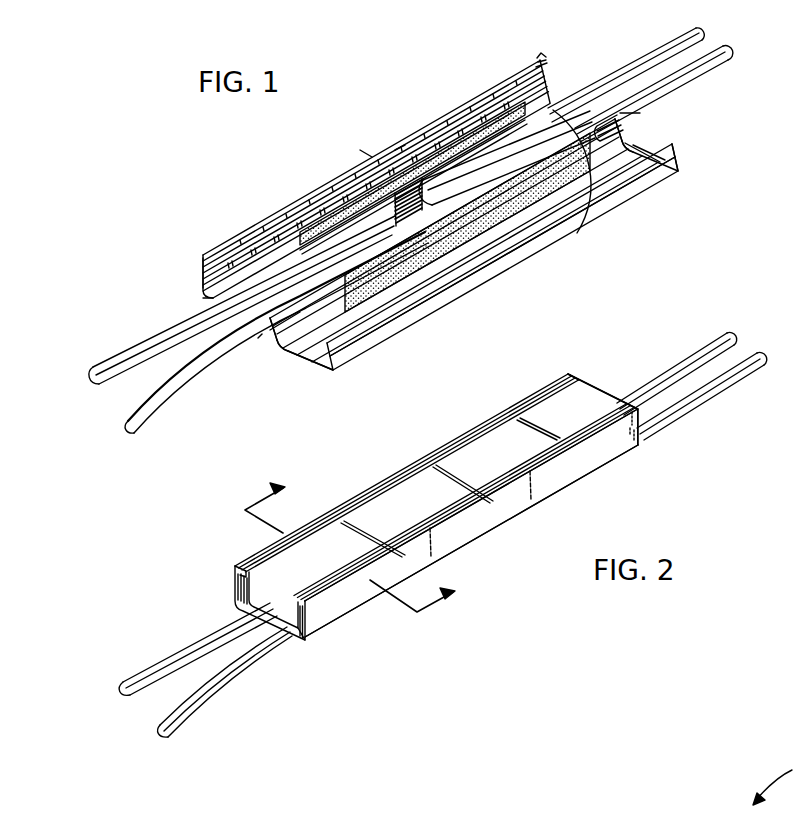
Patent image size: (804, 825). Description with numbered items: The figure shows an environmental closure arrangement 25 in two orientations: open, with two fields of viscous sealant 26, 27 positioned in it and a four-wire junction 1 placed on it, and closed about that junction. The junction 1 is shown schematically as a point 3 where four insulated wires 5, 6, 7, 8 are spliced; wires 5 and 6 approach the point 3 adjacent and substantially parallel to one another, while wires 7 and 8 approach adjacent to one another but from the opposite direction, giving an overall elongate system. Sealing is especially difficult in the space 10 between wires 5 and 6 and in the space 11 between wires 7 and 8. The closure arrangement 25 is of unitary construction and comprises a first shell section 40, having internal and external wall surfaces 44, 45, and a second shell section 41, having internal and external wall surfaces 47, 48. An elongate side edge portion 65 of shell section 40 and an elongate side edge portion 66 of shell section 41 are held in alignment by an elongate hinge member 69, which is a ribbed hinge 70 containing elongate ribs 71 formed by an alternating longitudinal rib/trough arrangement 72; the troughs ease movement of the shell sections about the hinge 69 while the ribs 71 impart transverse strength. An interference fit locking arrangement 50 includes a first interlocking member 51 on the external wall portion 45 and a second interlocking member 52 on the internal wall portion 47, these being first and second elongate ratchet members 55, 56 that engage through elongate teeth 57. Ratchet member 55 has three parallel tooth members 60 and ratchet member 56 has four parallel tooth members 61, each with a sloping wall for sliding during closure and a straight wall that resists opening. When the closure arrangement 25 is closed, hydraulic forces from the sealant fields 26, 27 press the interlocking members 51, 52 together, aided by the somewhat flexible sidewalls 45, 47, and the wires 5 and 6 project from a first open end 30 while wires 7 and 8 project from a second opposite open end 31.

In FIG. 1, the junction 1 is at (368, 155).
In FIG. 1, the point 3 is at (425, 195).
In FIG. 1, the insulated wire 5 is at (650, 57).
In FIG. 2, the insulated wire 5 is at (670, 360).
In FIG. 1, the insulated wire 6 is at (703, 74).
In FIG. 2, the insulated wire 6 is at (705, 390).
In FIG. 1, the insulated wire 7 is at (132, 345).
In FIG. 2, the insulated wire 7 is at (167, 653).
In FIG. 1, the insulated wire 8 is at (140, 395).
In FIG. 2, the insulated wire 8 is at (197, 713).
In FIG. 1, the space 10 is at (577, 233).
In FIG. 1, the space 11 is at (227, 318).
In FIG. 1, the closure arrangement 25 is at (174, 239).
In FIG. 2, the closure arrangement 25 is at (348, 622).
In FIG. 1, the sealant field 26 is at (395, 285).
In FIG. 1, the sealant field 27 is at (462, 147).
In FIG. 2, the first open end 30 is at (583, 380).
In FIG. 2, the second open end 31 is at (290, 640).
In FIG. 1, the first shell section 40 is at (485, 277).
In FIG. 2, the first shell section 40 is at (318, 553).
In FIG. 1, the second shell section 41 is at (350, 168).
In FIG. 2, the second shell section 41 is at (233, 590).
In FIG. 1, the internal wall surface 44 is at (615, 158).
In FIG. 1, the external wall surface 45 is at (318, 346).
In FIG. 2, the external wall surface 45 is at (587, 407).
In FIG. 1, the internal wall surface 47 is at (398, 152).
In FIG. 1, the external wall surface 48 is at (203, 277).
In FIG. 2, the interference fit locking arrangement 50 is at (415, 456).
In FIG. 1, the first interlocking member 51 is at (607, 197).
In FIG. 1, the second interlocking member 52 is at (540, 55).
In FIG. 2, the second interlocking member 52 is at (235, 575).
In FIG. 1, the first elongate ratchet member 55 is at (517, 250).
In FIG. 1, the second elongate ratchet member 56 is at (430, 130).
In FIG. 1, the elongate tooth 57 is at (542, 66).
In FIG. 1, the tooth member 60 is at (670, 147).
In FIG. 1, the tooth member 61 is at (317, 218).
In FIG. 1, the elongate side edge portion 65 is at (618, 138).
In FIG. 2, the elongate side edge portion 65 is at (552, 458).
In FIG. 1, the elongate side edge portion 66 is at (258, 338).
In FIG. 2, the elongate side edge portion 66 is at (518, 513).
In FIG. 1, the elongate hinge member 69 is at (277, 332).
In FIG. 2, the elongate hinge member 69 is at (600, 447).
In FIG. 1, the ribbed hinge 70 is at (306, 352).
In FIG. 1, the elongate rib 71 is at (290, 345).
In FIG. 1, the rib/trough arrangement 72 is at (618, 116).